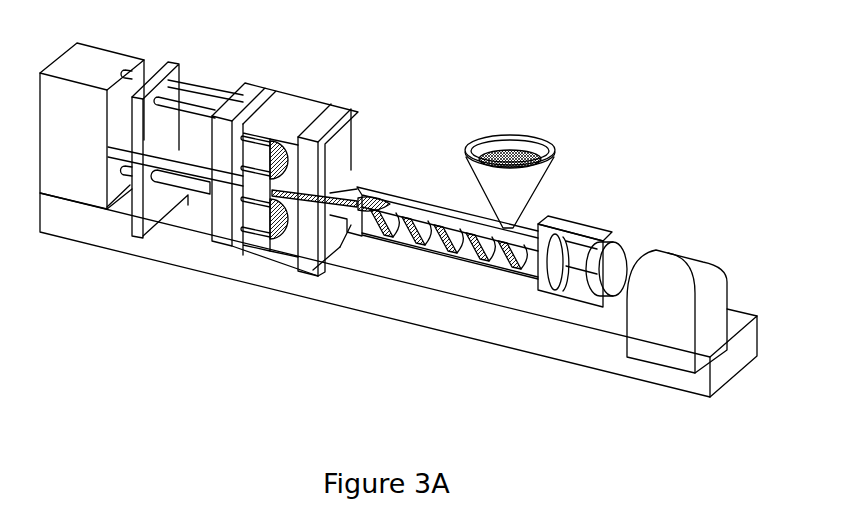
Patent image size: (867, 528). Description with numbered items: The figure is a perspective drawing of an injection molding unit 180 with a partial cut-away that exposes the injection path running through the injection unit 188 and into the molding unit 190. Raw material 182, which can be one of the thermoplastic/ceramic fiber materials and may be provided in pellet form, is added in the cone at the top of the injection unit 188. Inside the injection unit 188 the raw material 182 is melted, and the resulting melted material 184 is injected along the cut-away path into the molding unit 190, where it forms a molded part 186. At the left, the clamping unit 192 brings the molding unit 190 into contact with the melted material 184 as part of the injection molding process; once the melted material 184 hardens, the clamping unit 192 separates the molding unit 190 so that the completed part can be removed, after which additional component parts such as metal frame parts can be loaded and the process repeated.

The injection molding unit 180 is at (707, 437).
The raw material 182 is at (515, 160).
The melted material 184 is at (358, 190).
The molded part 186 is at (275, 143).
The injection unit 188 is at (499, 256).
The molding unit 190 is at (295, 189).
The clamping unit 192 is at (200, 284).